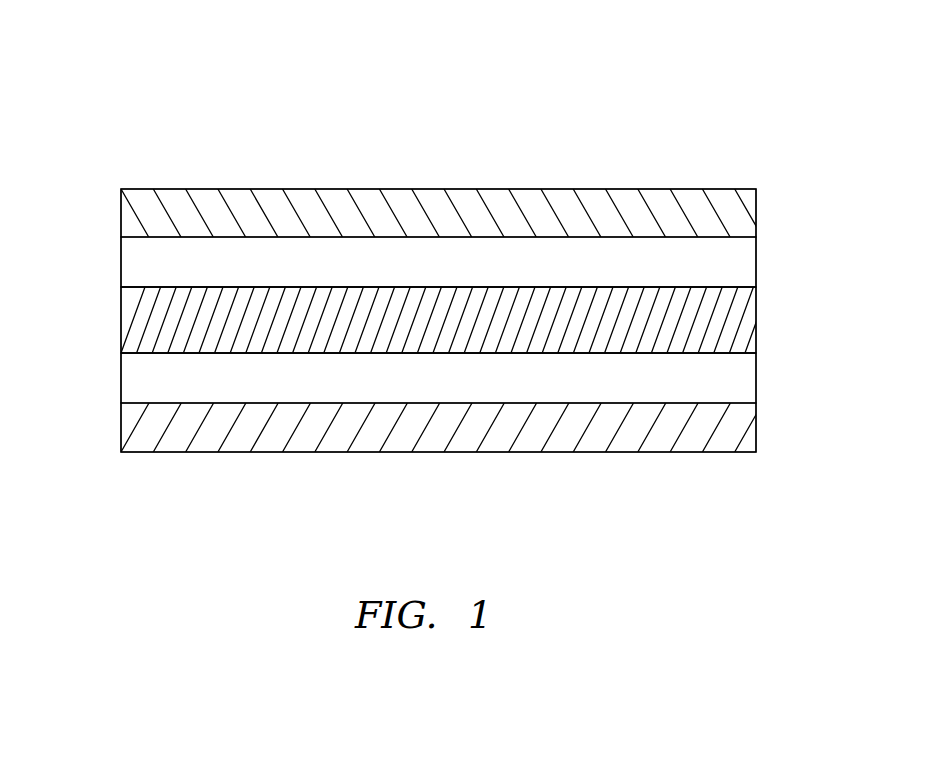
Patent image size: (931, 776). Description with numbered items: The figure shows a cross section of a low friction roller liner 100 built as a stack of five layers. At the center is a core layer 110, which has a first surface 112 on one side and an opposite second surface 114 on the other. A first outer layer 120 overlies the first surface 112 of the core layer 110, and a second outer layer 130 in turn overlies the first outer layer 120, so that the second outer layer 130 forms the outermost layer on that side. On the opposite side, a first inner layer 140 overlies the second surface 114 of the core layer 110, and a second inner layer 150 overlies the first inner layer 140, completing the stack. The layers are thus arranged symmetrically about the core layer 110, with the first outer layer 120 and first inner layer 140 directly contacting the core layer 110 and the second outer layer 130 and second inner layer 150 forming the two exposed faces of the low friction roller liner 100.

The low friction roller liner 100 is at (140, 41).
The core layer 110 is at (110, 316).
The first surface 112 is at (624, 284).
The second surface 114 is at (623, 357).
The first outer layer 120 is at (110, 255).
The second outer layer 130 is at (110, 207).
The first inner layer 140 is at (110, 377).
The second inner layer 150 is at (110, 424).